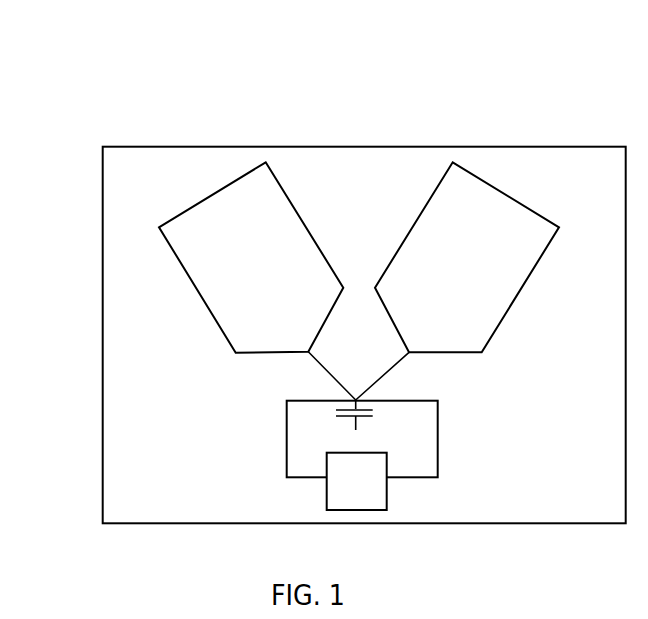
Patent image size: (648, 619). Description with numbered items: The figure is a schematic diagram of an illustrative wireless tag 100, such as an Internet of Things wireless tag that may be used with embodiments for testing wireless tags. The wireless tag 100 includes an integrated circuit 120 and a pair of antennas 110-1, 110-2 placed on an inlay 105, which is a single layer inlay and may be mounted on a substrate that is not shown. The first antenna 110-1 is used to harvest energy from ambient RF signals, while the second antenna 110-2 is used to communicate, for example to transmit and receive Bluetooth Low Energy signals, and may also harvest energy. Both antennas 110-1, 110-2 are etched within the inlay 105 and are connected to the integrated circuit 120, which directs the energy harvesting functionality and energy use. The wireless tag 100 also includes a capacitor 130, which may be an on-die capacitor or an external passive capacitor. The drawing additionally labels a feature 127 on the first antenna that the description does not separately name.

The wireless tag 100 is at (128, 66).
The inlay 105 is at (115, 195).
The first antenna 110-1 is at (288, 219).
The second antenna 110-2 is at (493, 198).
The antenna element edge 127 is at (232, 294).
The capacitor 130 is at (335, 413).
The integrated circuit 120 is at (325, 483).